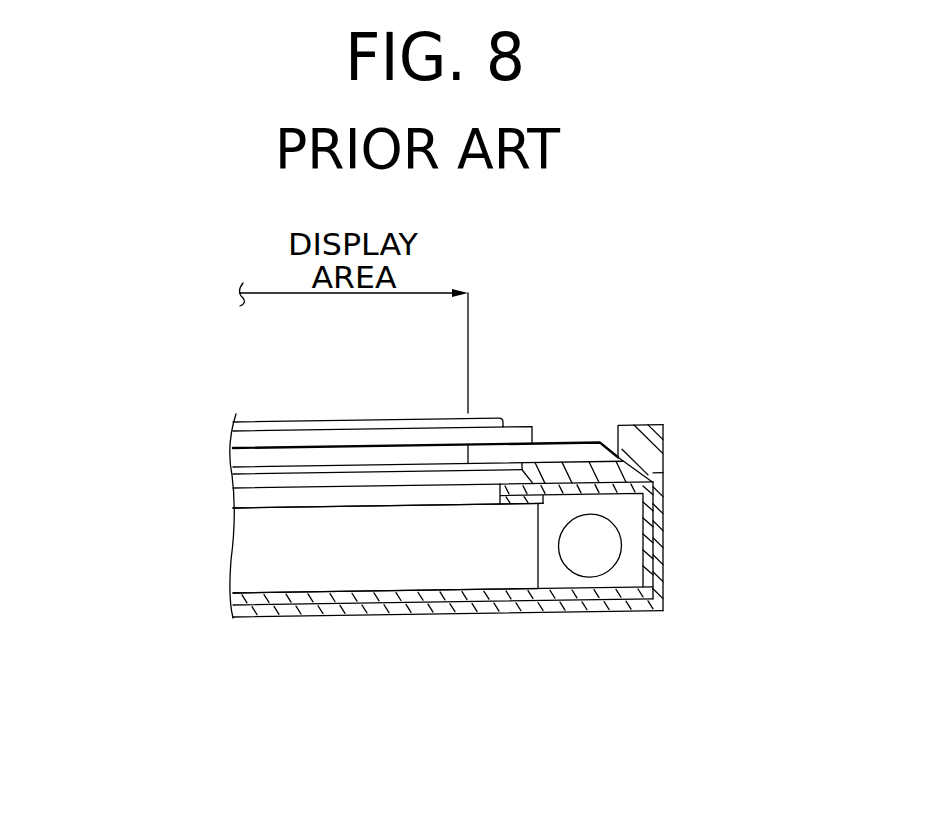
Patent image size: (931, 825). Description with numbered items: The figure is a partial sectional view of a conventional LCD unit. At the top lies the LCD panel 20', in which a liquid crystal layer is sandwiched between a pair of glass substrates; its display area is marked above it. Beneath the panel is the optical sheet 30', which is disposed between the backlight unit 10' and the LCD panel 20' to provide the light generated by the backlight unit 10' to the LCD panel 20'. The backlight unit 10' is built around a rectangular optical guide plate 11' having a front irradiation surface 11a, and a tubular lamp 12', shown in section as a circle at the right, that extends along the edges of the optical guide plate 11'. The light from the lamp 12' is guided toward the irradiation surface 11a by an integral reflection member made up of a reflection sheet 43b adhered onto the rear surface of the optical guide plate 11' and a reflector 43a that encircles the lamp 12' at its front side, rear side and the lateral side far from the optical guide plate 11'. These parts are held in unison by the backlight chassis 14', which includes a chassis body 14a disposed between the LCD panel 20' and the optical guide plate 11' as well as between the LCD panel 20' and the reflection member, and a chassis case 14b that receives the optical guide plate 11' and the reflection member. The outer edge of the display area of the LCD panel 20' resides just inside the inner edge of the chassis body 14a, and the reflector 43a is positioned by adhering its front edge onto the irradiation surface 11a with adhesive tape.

The backlight unit 10' is at (152, 516).
The optical guide plate 11' is at (385, 647).
The irradiation surface 11a is at (297, 516).
The tubular lamp 12' is at (676, 553).
The backlight chassis 14' is at (729, 555).
The chassis body 14a is at (652, 453).
The chassis case 14b is at (647, 612).
The LCD panel 20' is at (389, 383).
The optical sheet 30' is at (388, 415).
The reflector 43a is at (648, 515).
The reflection sheet 43b is at (410, 596).